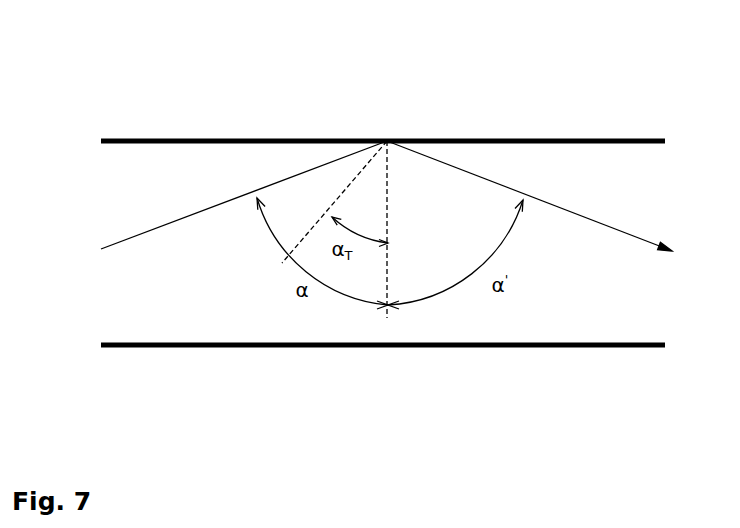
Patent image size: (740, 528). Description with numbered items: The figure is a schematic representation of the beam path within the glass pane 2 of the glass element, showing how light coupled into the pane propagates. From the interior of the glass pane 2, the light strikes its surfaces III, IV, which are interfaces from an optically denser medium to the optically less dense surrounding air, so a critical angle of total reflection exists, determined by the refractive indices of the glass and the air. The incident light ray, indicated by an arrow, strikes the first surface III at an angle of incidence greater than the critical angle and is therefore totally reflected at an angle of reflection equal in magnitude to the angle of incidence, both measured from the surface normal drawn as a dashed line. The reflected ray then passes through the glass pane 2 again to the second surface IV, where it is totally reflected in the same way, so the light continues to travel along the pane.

The glass pane 2 is at (387, 250).
The first surface III is at (544, 138).
The second surface IV is at (633, 352).